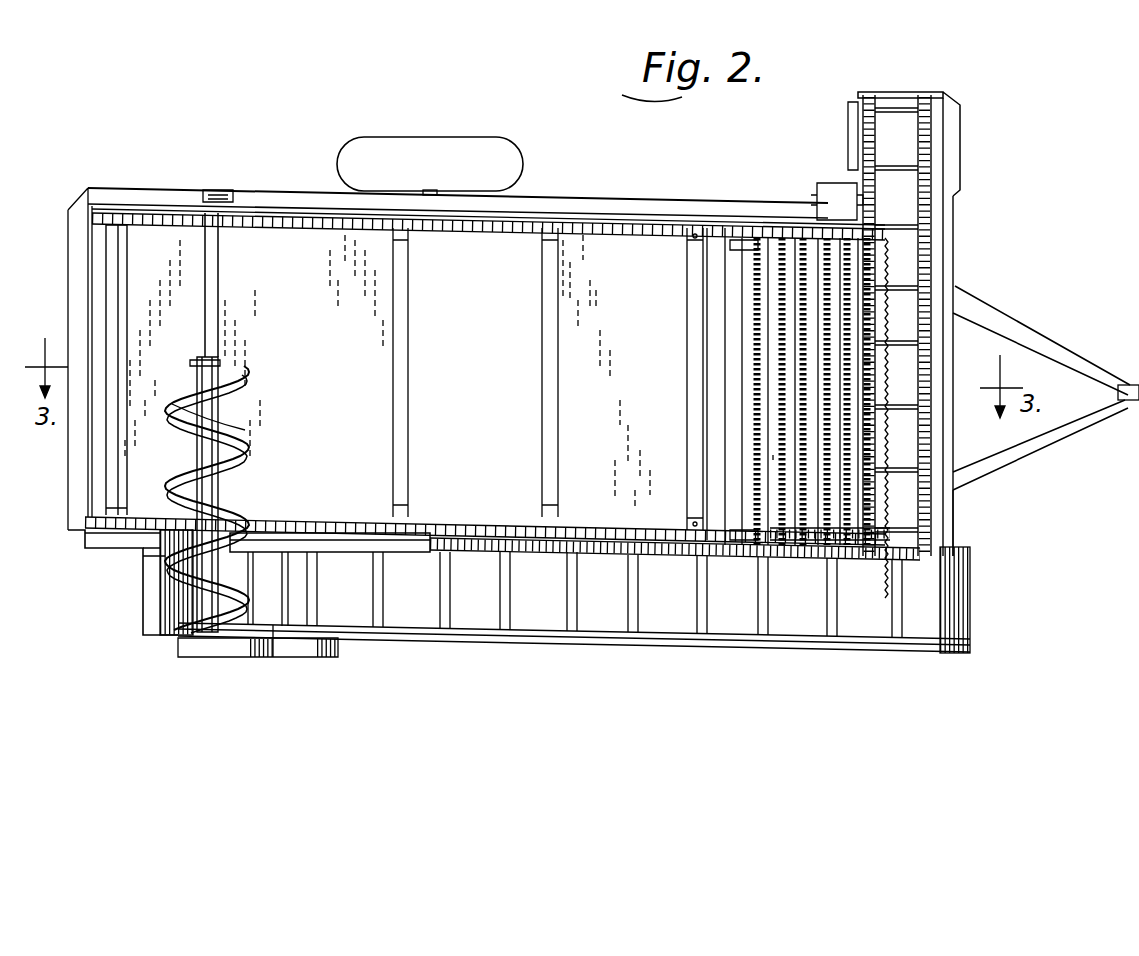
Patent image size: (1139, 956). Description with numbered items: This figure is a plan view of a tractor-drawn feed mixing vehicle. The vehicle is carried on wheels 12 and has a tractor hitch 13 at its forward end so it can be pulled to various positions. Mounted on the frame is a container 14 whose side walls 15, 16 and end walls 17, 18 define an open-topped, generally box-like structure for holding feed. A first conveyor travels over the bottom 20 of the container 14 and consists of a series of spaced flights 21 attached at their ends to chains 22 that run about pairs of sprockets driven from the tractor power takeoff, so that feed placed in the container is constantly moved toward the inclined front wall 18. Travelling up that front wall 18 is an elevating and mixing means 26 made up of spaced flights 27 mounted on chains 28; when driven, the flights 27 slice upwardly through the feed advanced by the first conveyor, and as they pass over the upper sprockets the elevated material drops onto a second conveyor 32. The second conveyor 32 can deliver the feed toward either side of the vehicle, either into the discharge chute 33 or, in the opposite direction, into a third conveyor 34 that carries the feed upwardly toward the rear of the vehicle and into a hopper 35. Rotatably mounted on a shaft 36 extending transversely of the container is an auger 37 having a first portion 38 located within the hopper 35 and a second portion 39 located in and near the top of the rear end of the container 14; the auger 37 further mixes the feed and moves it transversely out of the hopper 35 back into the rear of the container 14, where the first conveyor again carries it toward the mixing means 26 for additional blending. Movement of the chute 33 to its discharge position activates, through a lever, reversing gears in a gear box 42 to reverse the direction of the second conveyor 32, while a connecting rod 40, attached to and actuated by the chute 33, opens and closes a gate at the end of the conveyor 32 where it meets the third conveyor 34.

The wheels 12 is at (493, 148).
The tractor hitch 13 is at (1080, 425).
The container 14 is at (612, 275).
The side wall 15 is at (560, 200).
The side wall 16 is at (420, 540).
The end wall 17 is at (118, 336).
The end wall 18 is at (810, 518).
The bottom 20 is at (636, 438).
The flights 21 is at (408, 375).
The chains 22 is at (505, 238).
The elevating and mixing means 26 is at (770, 329).
The flights 27 is at (800, 452).
The chains 28 is at (776, 232).
The second conveyor 32 is at (905, 258).
The chute 33 is at (945, 95).
The third conveyor 34 is at (670, 612).
The hopper 35 is at (170, 605).
The shaft 36 is at (205, 263).
The auger 37 is at (187, 495).
The first portion 38 is at (162, 553).
The second portion 39 is at (189, 436).
The connecting rod 40 is at (950, 522).
The gear box 42 is at (832, 183).